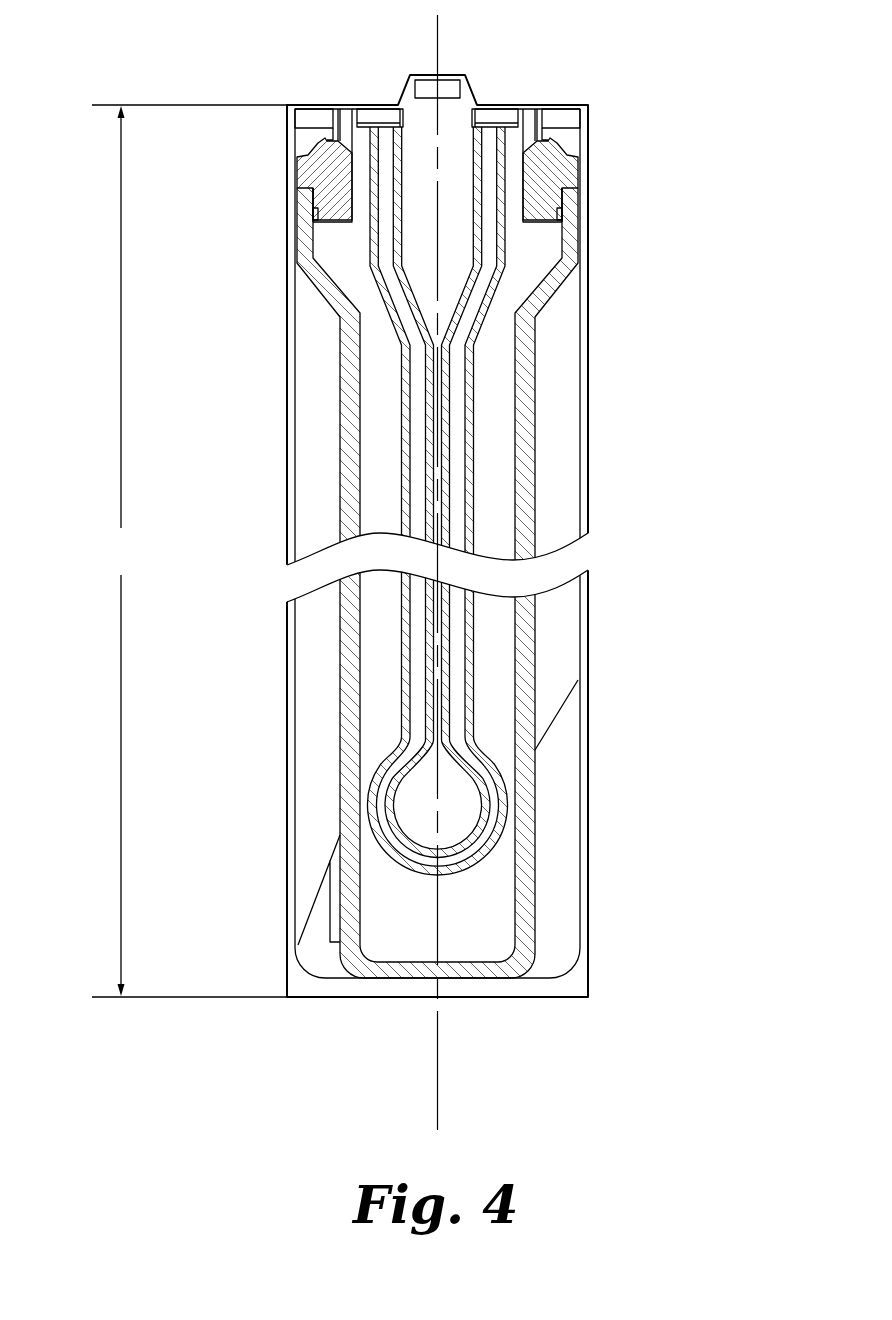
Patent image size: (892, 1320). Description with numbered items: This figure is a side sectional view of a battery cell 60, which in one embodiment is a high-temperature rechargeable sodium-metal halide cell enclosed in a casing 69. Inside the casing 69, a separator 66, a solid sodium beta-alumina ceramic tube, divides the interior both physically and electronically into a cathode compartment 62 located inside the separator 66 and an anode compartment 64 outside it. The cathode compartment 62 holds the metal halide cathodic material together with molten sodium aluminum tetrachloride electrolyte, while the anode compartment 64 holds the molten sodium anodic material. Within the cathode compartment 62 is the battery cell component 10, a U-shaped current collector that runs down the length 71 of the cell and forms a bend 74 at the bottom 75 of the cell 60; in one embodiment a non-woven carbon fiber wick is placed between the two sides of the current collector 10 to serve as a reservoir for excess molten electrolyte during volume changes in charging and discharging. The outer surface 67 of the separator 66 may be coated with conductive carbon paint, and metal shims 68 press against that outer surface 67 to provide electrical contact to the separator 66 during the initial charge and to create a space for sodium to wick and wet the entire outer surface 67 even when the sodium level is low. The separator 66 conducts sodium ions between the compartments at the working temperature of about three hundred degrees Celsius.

The battery cell component 10 is at (432, 587).
The battery cell 60 is at (264, 91).
The cathode compartment 62 is at (495, 462).
The anode compartment 64 is at (560, 337).
The separator 66 is at (528, 398).
The outer surface 67 is at (560, 886).
The shims 68 is at (558, 713).
The casing 69 is at (575, 975).
The length 71 is at (189, 551).
The bend 74 is at (405, 881).
The bottom 75 is at (617, 1024).